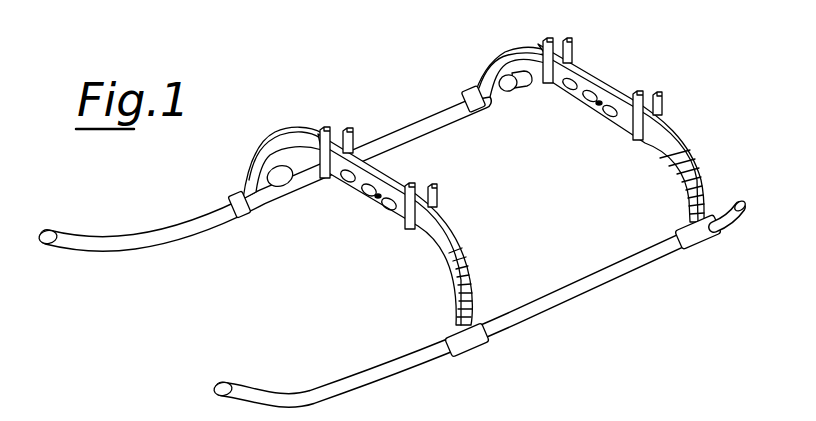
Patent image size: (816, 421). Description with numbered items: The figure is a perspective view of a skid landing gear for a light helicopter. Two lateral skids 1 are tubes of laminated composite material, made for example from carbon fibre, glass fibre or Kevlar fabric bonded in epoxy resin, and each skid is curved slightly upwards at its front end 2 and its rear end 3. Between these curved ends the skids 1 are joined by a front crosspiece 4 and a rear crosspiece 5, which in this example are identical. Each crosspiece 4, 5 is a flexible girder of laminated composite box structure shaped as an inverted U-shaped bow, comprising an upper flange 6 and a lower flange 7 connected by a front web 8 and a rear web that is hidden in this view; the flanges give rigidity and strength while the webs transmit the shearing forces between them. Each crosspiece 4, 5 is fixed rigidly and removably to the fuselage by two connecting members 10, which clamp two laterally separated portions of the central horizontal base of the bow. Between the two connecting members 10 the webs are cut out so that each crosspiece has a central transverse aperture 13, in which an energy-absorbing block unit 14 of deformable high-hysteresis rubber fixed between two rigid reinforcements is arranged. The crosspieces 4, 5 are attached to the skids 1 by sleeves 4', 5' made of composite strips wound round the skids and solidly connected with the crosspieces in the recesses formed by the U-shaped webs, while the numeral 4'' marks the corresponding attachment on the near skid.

The lateral skid 1 is at (415, 127).
The front curved end 2 is at (63, 233).
The rear curved end 3 is at (530, 90).
The front crosspiece 4 is at (390, 226).
The sleeve 4' is at (260, 213).
The attachment cuff of front cross tube 4'' is at (482, 349).
The rear crosspiece 5 is at (601, 133).
The sleeve 5' is at (605, 180).
The upper flange 6 is at (697, 172).
The lower flange 7 is at (498, 78).
The front web 8 is at (654, 142).
The connecting member 10 is at (328, 127).
The central transverse aperture 13 is at (598, 113).
The energy-absorbing block unit 14 is at (592, 103).